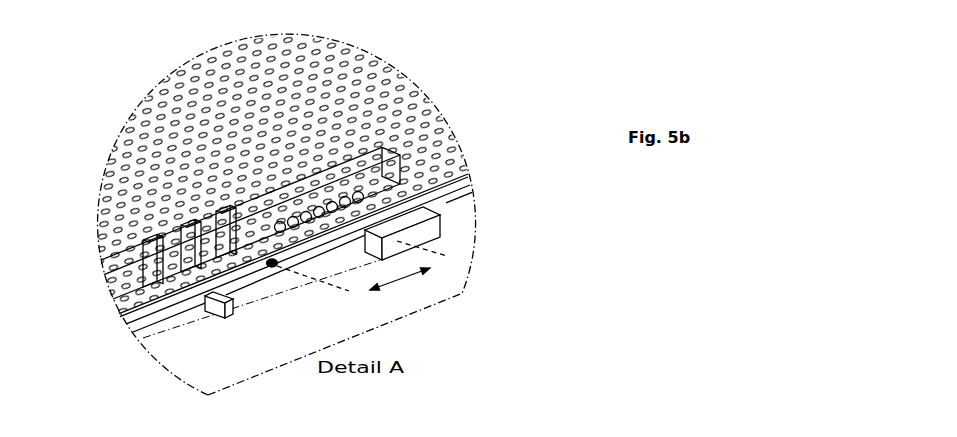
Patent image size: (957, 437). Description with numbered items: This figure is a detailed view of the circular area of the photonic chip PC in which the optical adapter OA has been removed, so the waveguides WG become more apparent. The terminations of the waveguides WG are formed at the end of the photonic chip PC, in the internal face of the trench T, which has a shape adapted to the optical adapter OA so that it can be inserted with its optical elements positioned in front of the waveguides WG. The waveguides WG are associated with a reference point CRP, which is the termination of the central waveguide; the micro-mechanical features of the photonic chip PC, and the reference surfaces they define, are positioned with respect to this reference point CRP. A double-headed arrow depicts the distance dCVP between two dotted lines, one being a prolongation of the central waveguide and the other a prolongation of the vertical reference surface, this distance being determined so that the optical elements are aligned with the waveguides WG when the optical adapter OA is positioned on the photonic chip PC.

The photonic chip PC is at (424, 110).
The waveguides WG is at (127, 228).
The optical adapter OA is at (398, 184).
The reference point CRP is at (276, 267).
The trench T is at (226, 318).
The distance d_CVP dCVP is at (408, 269).